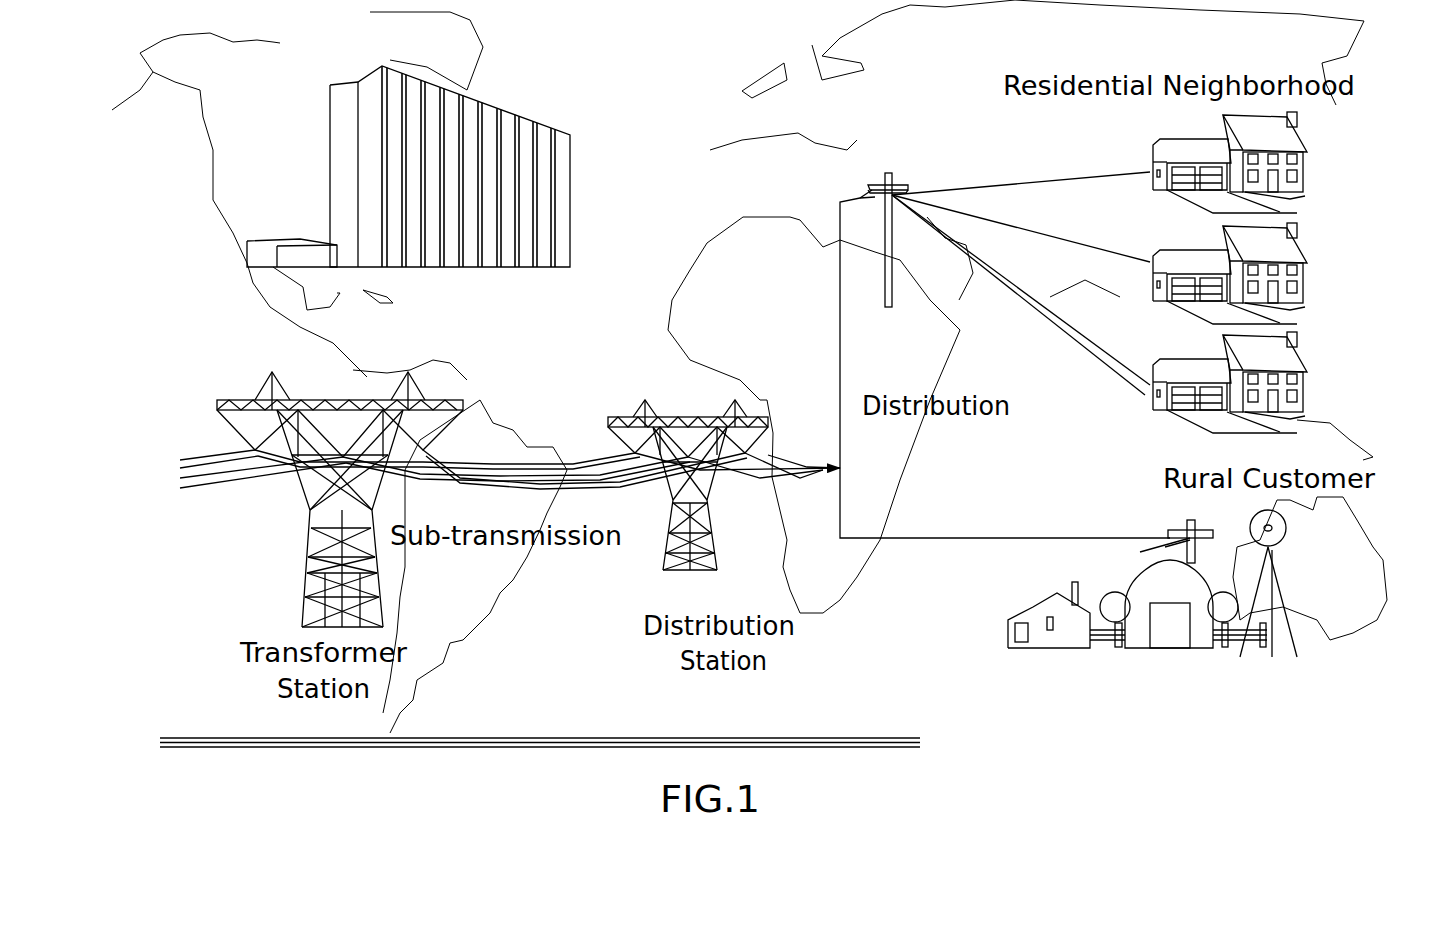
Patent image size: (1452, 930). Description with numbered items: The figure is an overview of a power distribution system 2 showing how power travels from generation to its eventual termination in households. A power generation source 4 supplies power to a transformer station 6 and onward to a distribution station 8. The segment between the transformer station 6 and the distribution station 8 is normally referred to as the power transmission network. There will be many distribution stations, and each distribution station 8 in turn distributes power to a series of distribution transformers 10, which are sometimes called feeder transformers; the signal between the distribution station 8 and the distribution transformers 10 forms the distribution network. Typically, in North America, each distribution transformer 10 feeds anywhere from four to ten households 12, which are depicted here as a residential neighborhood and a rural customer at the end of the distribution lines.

The power distribution system 2 is at (633, 155).
The power generation source 4 is at (583, 192).
The transformer station 6 is at (282, 577).
The distribution station 8 is at (638, 578).
The distribution transformer 10 is at (845, 192).
The households 12 is at (1322, 157).